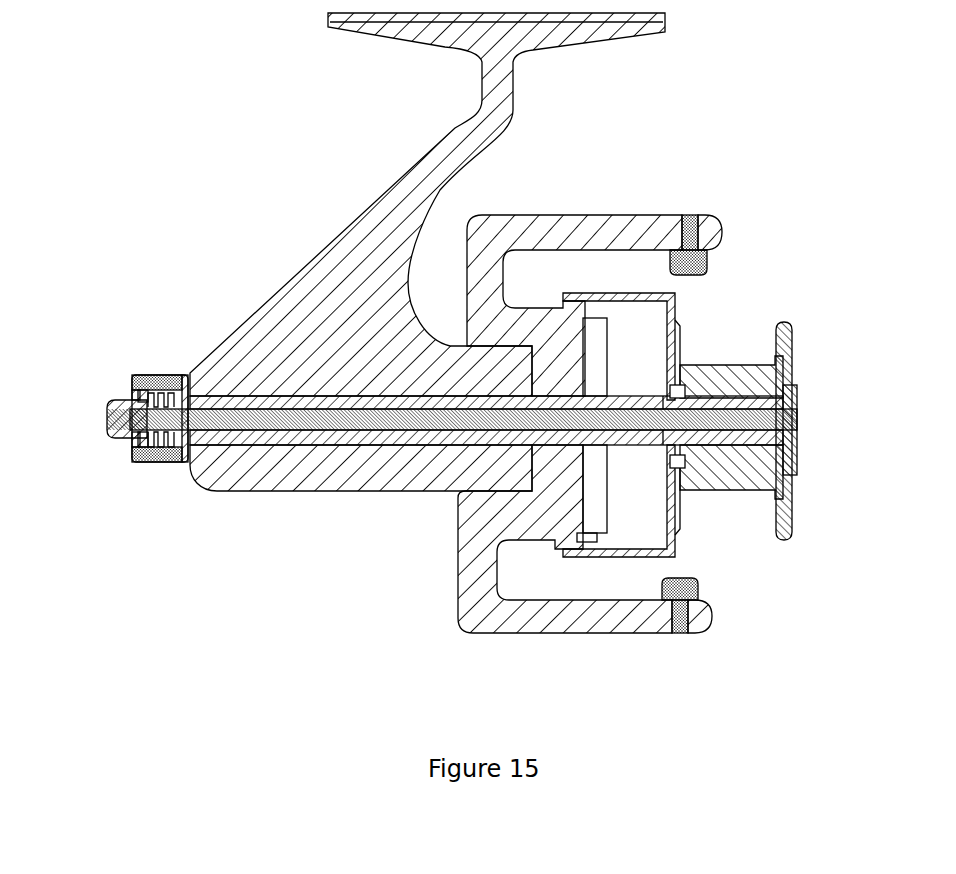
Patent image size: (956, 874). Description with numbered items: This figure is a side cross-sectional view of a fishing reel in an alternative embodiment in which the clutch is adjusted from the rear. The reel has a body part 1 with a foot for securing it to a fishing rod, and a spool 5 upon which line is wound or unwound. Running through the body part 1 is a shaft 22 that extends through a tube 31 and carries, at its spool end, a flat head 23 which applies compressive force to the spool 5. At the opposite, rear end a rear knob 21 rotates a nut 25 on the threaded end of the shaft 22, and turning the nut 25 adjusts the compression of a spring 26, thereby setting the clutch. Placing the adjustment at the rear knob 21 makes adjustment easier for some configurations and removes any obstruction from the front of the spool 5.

The body part 1 is at (330, 300).
The spool 5 is at (716, 372).
The rear knob 21 is at (148, 463).
The shaft 22 is at (370, 425).
The flat head 23 is at (793, 476).
The nut 25 is at (124, 403).
The spring 26 is at (163, 393).
The tube 31 is at (235, 487).